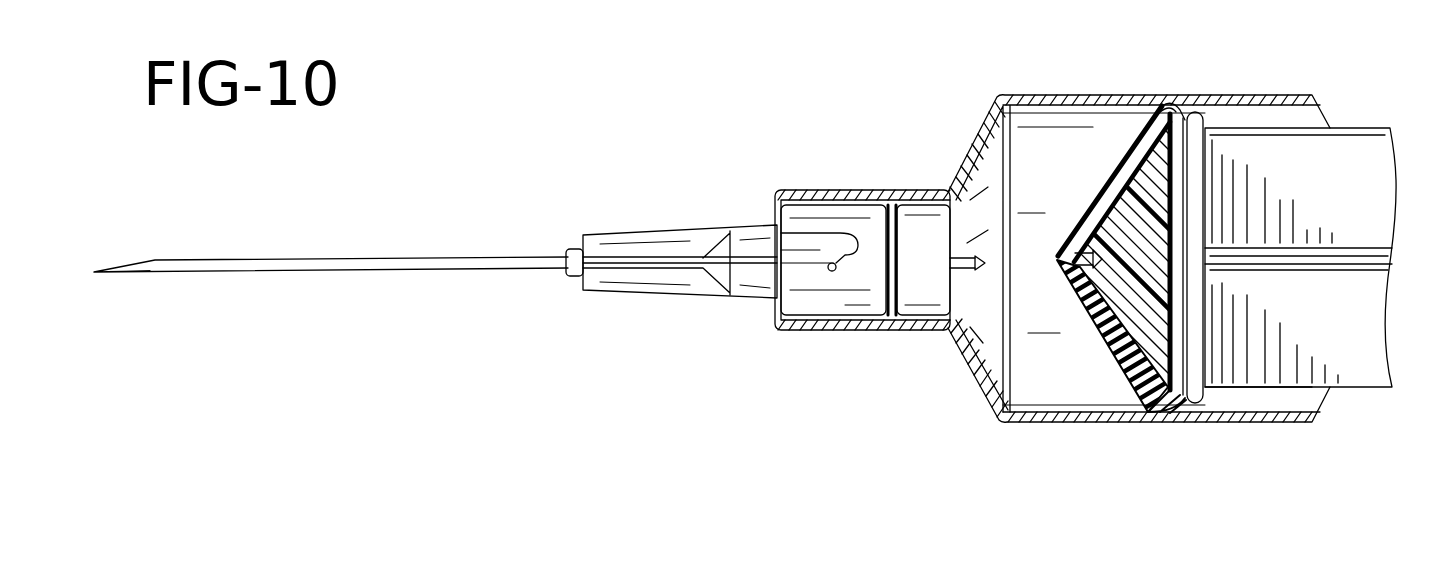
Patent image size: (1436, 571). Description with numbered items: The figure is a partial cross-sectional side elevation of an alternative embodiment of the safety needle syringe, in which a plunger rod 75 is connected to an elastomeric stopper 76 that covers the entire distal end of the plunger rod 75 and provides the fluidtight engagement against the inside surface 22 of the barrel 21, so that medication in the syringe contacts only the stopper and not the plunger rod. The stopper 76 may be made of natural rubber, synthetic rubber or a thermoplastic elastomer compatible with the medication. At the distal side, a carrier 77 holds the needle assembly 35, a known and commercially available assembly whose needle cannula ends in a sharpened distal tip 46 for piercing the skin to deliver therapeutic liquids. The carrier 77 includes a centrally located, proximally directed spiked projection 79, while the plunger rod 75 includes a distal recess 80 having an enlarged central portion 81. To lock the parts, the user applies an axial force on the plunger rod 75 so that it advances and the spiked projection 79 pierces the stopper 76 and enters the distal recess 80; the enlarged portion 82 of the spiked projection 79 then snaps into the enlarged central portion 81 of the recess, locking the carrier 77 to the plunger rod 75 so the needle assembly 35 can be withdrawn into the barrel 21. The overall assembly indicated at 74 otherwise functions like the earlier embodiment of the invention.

The barrel 21 is at (1292, 95).
The inside surface 22 is at (1305, 388).
The needle assembly 35 is at (605, 283).
The sharpened distal tip 46 is at (95, 272).
The needle assembly 74 is at (632, 140).
The plunger rod 75 is at (1376, 128).
The elastomeric stopper 76 is at (1107, 160).
The carrier 77 is at (803, 302).
The spiked projection 79 is at (977, 268).
The distal recess 80 is at (1064, 264).
The enlarged central portion 81 is at (1128, 245).
The enlarged portion 82 is at (979, 263).